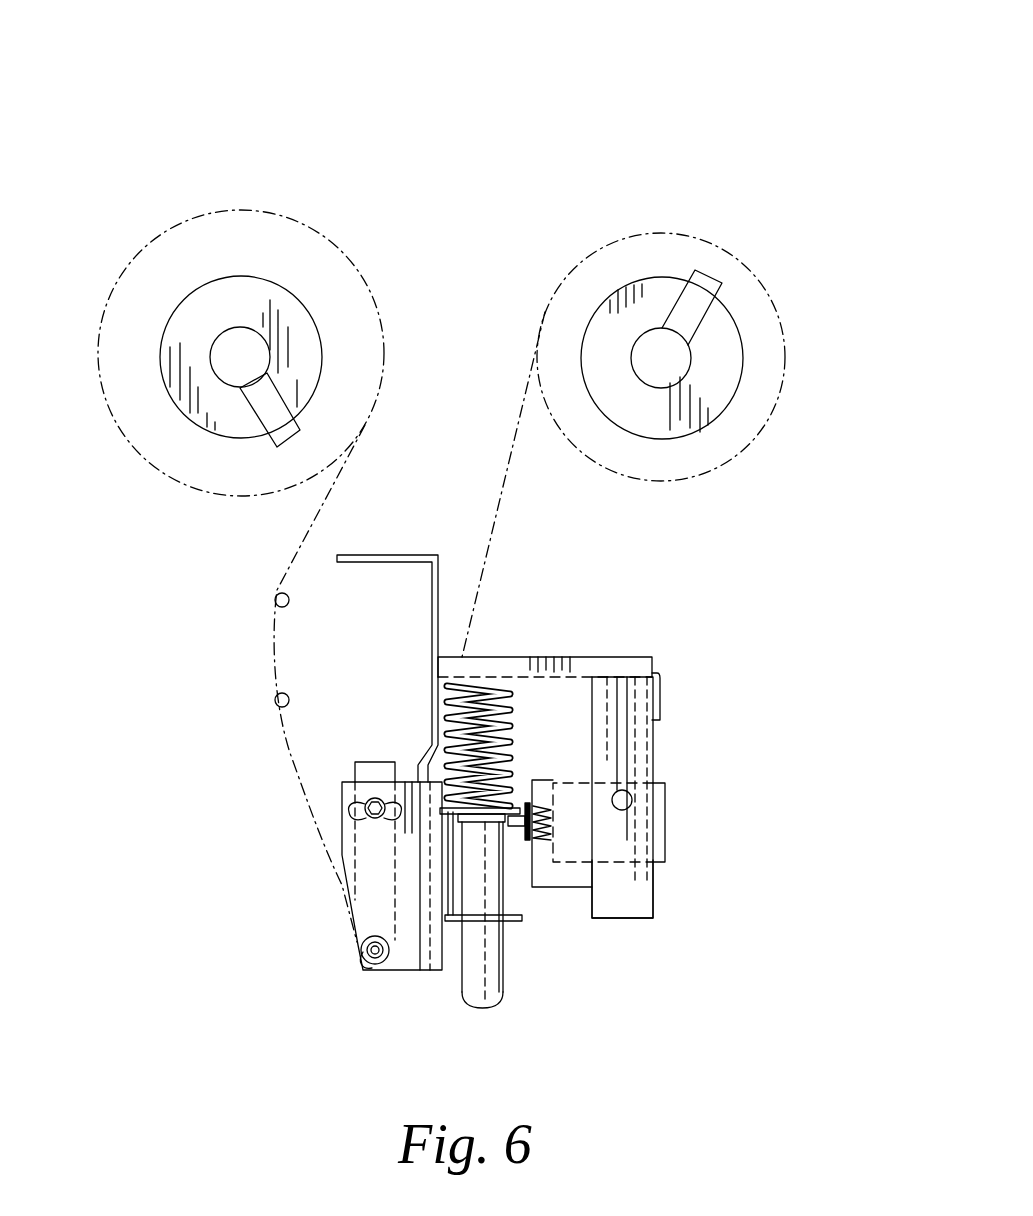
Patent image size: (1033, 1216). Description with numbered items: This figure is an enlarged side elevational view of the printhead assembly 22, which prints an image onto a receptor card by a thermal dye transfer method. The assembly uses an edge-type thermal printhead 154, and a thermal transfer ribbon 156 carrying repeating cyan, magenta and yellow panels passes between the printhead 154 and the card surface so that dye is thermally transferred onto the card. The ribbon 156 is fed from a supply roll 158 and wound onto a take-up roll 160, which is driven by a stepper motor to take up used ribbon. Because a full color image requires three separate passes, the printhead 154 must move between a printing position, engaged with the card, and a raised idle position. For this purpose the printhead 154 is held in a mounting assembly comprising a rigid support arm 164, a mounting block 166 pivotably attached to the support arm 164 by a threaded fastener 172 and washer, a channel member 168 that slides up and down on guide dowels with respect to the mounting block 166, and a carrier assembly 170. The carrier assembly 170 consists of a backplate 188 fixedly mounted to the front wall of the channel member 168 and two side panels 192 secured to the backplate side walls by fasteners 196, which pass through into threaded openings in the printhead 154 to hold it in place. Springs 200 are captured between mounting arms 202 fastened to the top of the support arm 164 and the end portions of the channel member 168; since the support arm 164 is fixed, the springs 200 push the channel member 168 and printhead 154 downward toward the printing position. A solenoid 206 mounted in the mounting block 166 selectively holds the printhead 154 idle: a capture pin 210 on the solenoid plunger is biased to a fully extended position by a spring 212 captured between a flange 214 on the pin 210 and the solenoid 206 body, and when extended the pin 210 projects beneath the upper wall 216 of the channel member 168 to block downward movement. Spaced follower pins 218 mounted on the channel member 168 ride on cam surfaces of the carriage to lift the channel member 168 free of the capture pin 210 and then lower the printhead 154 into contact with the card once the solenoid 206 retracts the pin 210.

The printhead assembly 22 is at (745, 712).
The edge-type thermal printhead 154 is at (327, 903).
The thermal transfer ribbon 156 is at (517, 430).
The supply roll 158 is at (252, 212).
The take-up roll 160 is at (718, 253).
The rigid support arm 164 is at (625, 900).
The mounting block 166 is at (570, 757).
The channel member 168 is at (540, 896).
The carrier assembly 170 is at (330, 788).
The threaded fastener 172 is at (660, 688).
The backplate 188 is at (380, 556).
The side panels 192 is at (425, 955).
The fasteners 196 is at (377, 800).
The springs 200 is at (516, 795).
The mounting arms 202 is at (607, 664).
The solenoid 206 is at (667, 848).
The capture pin 210 is at (530, 805).
The spring 212 is at (530, 802).
The flange 214 is at (517, 820).
The upper wall 216 is at (522, 806).
The follower pins 218 is at (480, 972).